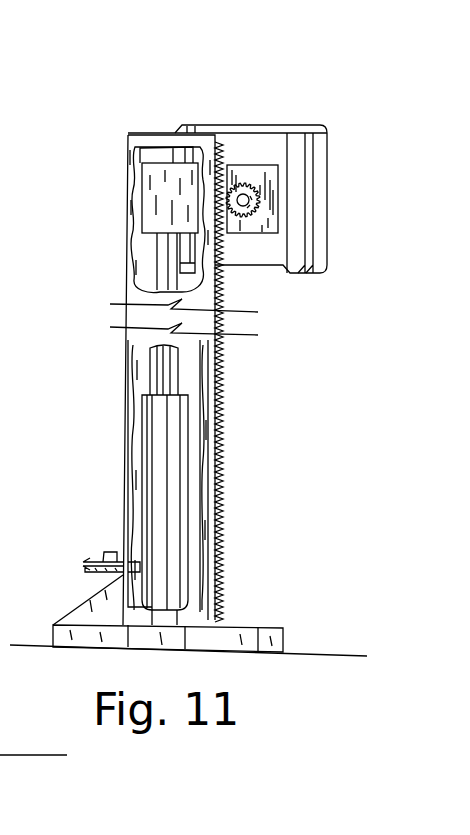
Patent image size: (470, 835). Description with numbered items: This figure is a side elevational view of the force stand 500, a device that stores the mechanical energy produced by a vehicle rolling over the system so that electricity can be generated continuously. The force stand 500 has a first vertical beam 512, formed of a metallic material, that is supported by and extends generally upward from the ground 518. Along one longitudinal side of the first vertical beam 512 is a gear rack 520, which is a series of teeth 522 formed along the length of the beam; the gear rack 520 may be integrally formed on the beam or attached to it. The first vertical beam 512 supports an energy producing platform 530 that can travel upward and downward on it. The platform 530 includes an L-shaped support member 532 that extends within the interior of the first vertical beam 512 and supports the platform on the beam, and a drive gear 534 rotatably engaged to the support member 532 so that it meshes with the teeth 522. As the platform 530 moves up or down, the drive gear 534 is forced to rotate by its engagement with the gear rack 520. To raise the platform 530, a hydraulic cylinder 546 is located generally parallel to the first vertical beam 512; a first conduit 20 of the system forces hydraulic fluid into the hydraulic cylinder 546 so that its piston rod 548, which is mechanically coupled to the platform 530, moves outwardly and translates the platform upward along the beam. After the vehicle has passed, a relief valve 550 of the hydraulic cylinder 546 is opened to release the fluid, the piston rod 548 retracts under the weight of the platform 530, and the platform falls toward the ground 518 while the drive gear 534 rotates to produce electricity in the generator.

The force stand 500 is at (166, 92).
The first vertical beam 512 is at (122, 375).
The ground 518 is at (337, 652).
The gear rack 520 is at (223, 488).
The teeth 522 is at (223, 450).
The energy producing platform 530 is at (283, 130).
The L-shaped support member 532 is at (278, 178).
The drive gear 534 is at (250, 220).
The hydraulic cylinder 546 is at (157, 465).
The piston rod 548 is at (173, 367).
The relief valve 550 is at (108, 552).
The first conduit 20 is at (90, 562).